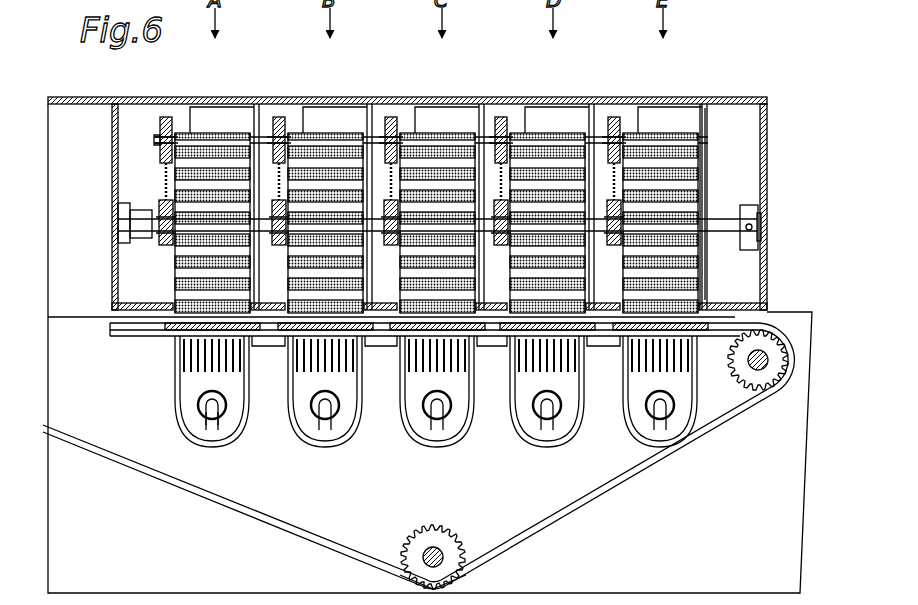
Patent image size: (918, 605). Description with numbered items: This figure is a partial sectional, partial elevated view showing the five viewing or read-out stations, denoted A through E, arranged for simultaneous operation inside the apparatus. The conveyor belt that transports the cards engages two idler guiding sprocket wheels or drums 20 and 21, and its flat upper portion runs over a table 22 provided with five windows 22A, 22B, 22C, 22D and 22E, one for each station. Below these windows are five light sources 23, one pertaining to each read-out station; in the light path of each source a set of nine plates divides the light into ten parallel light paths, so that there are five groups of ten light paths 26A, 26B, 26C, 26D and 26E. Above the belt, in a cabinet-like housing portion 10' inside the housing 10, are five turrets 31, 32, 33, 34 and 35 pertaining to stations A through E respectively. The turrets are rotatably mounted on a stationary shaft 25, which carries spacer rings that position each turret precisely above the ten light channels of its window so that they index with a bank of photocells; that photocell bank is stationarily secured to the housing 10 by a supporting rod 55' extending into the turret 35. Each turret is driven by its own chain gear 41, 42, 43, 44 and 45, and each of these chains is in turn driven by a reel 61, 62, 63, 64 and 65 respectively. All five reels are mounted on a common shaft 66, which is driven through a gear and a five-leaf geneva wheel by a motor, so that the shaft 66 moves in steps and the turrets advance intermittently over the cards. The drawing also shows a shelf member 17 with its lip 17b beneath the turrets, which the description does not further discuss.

The housing 10 is at (407, 176).
The cabinet like housing portion 10' is at (430, 348).
The shelf member 17 is at (292, 340).
The shelf lip 17b is at (173, 320).
The idler guiding sprocket wheel 20 is at (452, 546).
The idler guiding sprocket wheel 21 is at (772, 384).
The table 22 is at (112, 338).
The window 22A is at (190, 350).
The window 22B is at (302, 350).
The window 22C is at (414, 350).
The window 22D is at (526, 350).
The window 22E is at (638, 350).
The light source 23 is at (222, 425).
The stationary shaft 25 is at (718, 225).
The group of light paths 26A is at (205, 372).
The group of light paths 26B is at (318, 372).
The group of light paths 26C is at (430, 372).
The group of light paths 26D is at (540, 372).
The group of light paths 26E is at (650, 372).
The turret 31 is at (228, 133).
The turret 32 is at (345, 138).
The turret 33 is at (455, 136).
The turret 34 is at (565, 136).
The turret 35 is at (680, 138).
The chain gear 41 is at (164, 188).
The chain gear 42 is at (279, 175).
The chain gear 43 is at (391, 178).
The chain gear 44 is at (501, 178).
The chain gear 45 is at (614, 178).
The supporting rod 55' is at (718, 207).
The reel 61 is at (172, 125).
The reel 62 is at (285, 125).
The reel 63 is at (397, 125).
The reel 64 is at (507, 125).
The reel 65 is at (620, 125).
The common shaft 66 is at (158, 140).